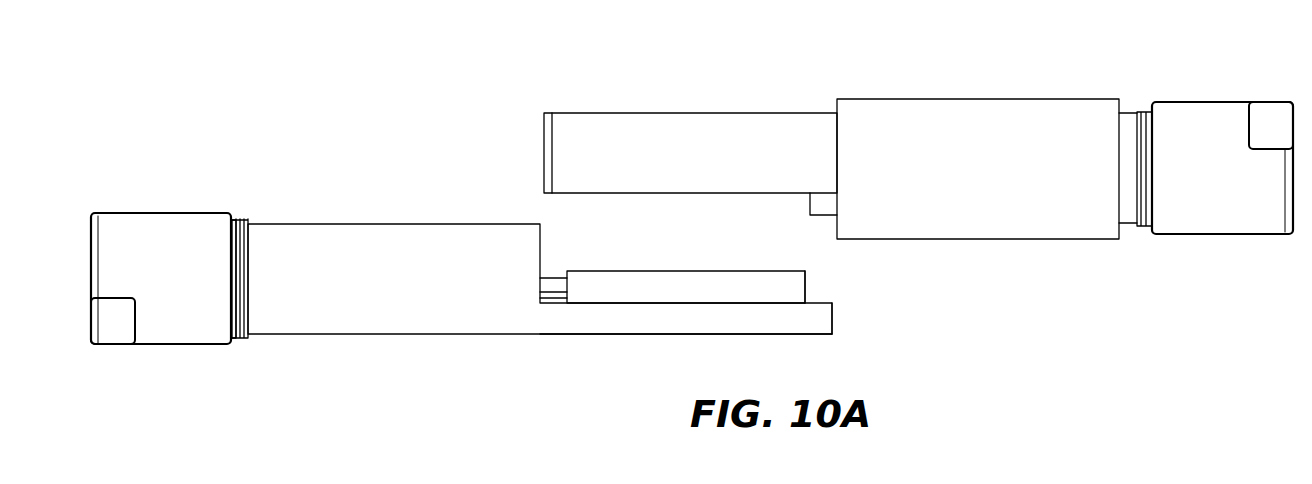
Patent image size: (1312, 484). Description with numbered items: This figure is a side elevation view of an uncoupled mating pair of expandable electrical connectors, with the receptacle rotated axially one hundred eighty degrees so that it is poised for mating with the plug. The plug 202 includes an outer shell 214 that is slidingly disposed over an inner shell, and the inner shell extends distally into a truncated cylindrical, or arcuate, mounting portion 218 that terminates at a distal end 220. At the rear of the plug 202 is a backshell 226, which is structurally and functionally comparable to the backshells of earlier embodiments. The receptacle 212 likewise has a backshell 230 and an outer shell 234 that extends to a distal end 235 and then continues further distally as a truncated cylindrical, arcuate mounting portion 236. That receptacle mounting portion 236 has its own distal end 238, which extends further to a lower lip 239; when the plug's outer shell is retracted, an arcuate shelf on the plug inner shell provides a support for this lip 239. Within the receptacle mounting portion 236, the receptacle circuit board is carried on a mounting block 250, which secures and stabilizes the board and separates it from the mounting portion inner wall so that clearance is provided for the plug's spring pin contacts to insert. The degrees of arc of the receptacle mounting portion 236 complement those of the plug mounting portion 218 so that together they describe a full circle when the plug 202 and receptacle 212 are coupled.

The plug 202 is at (927, 77).
The receptacle 212 is at (298, 200).
The outer shell 214 is at (1050, 97).
The mounting portion 218 is at (677, 112).
The distal end 220 is at (543, 148).
The backshell 226 is at (1207, 100).
The backshell 230 is at (178, 212).
The outer shell 234 is at (414, 223).
The distal end 235 is at (551, 226).
The mounting portion 236 is at (652, 335).
The distal end 238 is at (833, 318).
The lower lip 239 is at (815, 302).
The mounting block 250 is at (661, 270).